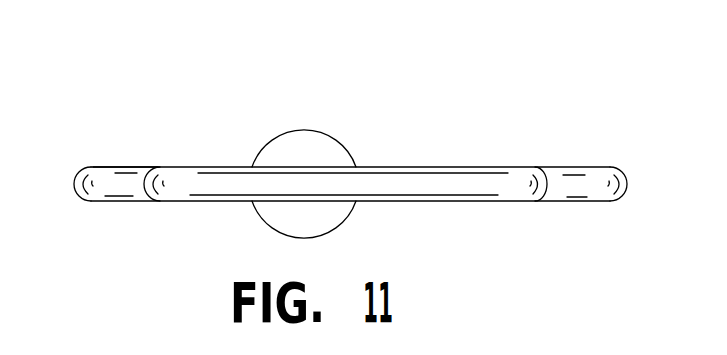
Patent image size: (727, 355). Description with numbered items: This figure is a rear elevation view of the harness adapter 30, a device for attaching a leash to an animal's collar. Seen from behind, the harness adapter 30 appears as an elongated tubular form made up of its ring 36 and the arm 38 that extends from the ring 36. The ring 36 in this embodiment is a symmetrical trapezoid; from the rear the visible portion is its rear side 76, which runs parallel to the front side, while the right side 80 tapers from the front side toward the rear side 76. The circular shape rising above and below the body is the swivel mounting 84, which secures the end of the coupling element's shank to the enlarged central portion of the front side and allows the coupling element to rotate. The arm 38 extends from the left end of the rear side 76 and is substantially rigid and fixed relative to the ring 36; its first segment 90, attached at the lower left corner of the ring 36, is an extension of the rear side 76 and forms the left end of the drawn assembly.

The harness adapter 30 is at (493, 92).
The arm 38 is at (97, 167).
The first segment 90 is at (84, 200).
The ring 36 is at (175, 201).
The rear side 76 is at (208, 186).
The swivel mounting 84 is at (313, 131).
The right side 80 is at (584, 187).